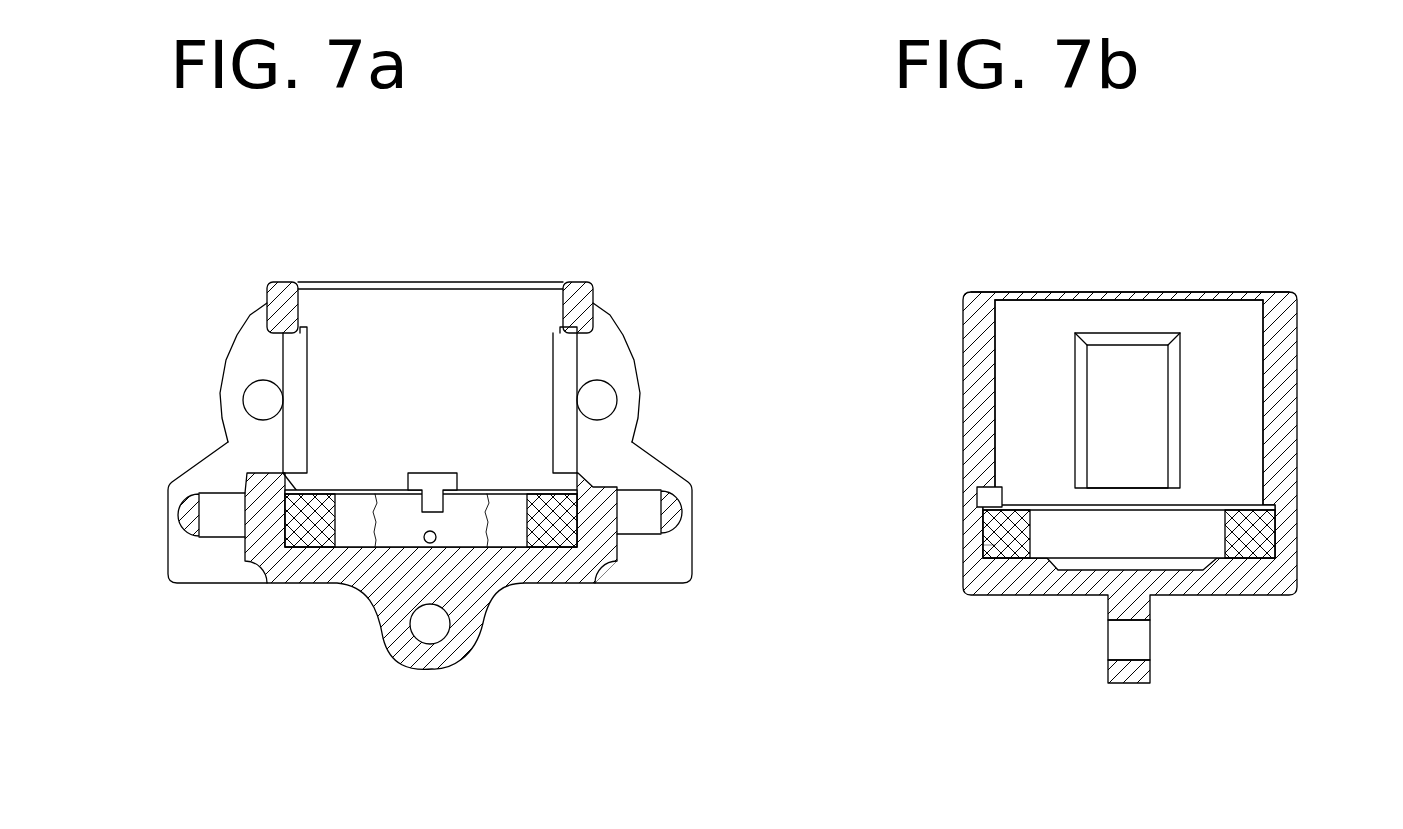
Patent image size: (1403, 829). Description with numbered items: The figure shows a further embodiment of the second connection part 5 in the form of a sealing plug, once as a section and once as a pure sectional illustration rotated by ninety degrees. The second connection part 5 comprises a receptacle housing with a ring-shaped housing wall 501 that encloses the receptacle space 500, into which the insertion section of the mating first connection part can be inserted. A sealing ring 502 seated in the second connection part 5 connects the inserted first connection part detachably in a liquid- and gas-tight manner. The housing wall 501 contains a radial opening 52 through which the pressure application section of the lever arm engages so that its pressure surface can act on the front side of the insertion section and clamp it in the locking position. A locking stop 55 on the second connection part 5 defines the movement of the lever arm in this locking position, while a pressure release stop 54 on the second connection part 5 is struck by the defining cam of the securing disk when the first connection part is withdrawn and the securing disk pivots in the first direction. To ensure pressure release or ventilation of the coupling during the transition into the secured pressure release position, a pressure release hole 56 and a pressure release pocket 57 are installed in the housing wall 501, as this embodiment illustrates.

In FIG. 7a, the second connection part 5 is at (568, 600).
In FIG. 7b, the second connection part 5 is at (987, 620).
In FIG. 7a, the receptacle space 500 is at (462, 388).
In FIG. 7b, the receptacle space 500 is at (1207, 337).
In FIG. 7a, the housing wall 501 is at (309, 373).
In FIG. 7b, the housing wall 501 is at (1267, 340).
In FIG. 7a, the sealing ring 502 is at (613, 487).
In FIG. 7b, the sealing ring 502 is at (1013, 522).
In FIG. 7a, the radial opening 52 is at (310, 400).
In FIG. 7b, the radial opening 52 is at (1140, 408).
In FIG. 7a, the pressure release stop 54 is at (543, 520).
In FIG. 7b, the pressure release stop 54 is at (1129, 531).
In FIG. 7a, the locking stop 55 is at (613, 557).
In FIG. 7a, the pressure release hole 56 is at (447, 548).
In FIG. 7b, the pressure release hole 56 is at (985, 545).
In FIG. 7a, the pressure release pocket 57 is at (434, 491).
In FIG. 7b, the pressure release pocket 57 is at (993, 487).